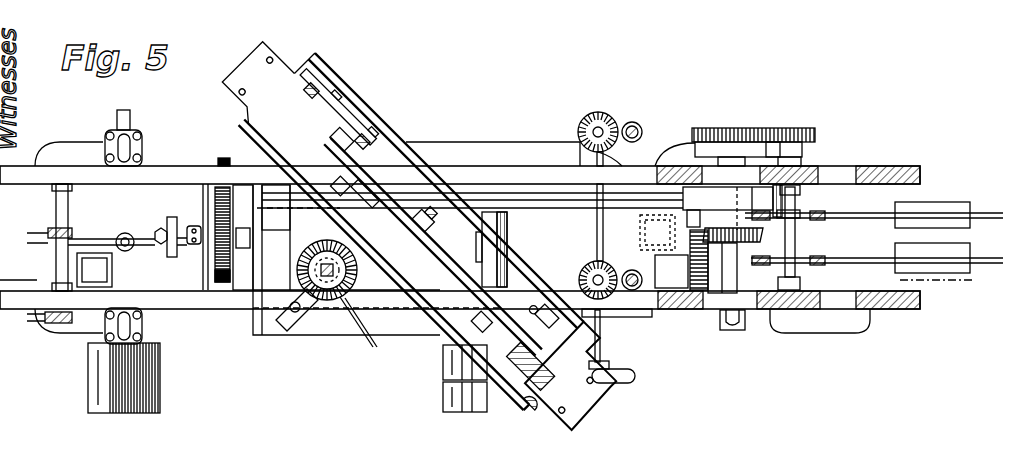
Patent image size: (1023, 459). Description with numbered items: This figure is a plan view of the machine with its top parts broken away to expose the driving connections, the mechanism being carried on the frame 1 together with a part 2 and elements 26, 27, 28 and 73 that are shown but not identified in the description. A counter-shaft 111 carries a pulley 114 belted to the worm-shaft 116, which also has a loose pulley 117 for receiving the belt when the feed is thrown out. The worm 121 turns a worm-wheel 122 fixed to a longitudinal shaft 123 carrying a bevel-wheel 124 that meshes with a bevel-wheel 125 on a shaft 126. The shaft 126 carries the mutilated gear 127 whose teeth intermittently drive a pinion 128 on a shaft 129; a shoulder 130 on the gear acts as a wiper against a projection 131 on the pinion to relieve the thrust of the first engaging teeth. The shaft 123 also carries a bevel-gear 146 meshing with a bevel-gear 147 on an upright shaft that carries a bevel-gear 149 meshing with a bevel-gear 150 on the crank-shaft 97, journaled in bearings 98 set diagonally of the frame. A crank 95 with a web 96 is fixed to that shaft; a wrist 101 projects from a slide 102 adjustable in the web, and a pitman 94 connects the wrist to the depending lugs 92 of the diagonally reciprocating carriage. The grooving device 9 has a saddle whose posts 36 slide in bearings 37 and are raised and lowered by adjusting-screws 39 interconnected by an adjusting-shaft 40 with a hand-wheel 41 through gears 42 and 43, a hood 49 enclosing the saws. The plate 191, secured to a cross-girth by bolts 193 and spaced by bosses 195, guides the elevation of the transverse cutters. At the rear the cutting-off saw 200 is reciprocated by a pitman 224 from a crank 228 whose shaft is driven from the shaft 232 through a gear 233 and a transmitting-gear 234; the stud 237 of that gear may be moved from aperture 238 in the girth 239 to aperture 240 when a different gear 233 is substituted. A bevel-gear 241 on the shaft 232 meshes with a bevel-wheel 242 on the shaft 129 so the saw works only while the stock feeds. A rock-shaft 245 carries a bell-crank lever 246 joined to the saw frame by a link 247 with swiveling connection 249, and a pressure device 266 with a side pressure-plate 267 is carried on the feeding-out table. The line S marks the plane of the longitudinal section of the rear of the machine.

The frame rail 1 is at (912, 168).
The shaft 2 is at (990, 222).
The grooving device 9 is at (341, 175).
The lower shaft 26 is at (822, 262).
The bevel gear 27 is at (740, 250).
The post 28 is at (768, 258).
The post 36 is at (640, 122).
The bearing 37 is at (657, 155).
The adjusting-screw 39 is at (603, 113).
The adjusting-shaft 40 is at (604, 214).
The hand-wheel 41 is at (636, 380).
The gear 42 is at (580, 150).
The gear 43 is at (582, 122).
The hood 49 is at (657, 232).
The arm bar 73 is at (360, 125).
The depending lugs 92 is at (535, 318).
The pitman 94 is at (474, 320).
The crank 95 is at (375, 190).
The web 96 is at (343, 180).
The crank-shaft 97 is at (284, 330).
The bearings 98 is at (320, 244).
The wrist 101 is at (438, 203).
The slide 102 is at (420, 206).
The counter-shaft 111 is at (130, 120).
The pulley 114 is at (92, 377).
The worm-shaft 116 is at (445, 362).
The loose pulley 117 is at (445, 397).
The worm 121 is at (508, 240).
The worm-wheel 122 is at (476, 244).
The shaft 123 is at (482, 252).
The bevel-wheel 124 is at (722, 320).
The bevel-wheel 125 is at (728, 208).
The shaft 126 is at (730, 270).
The mutilated gear 127 is at (708, 128).
The pinion 128 is at (790, 128).
The shaft 129 is at (800, 243).
The shoulder 130 is at (772, 128).
The projection 131 is at (782, 147).
The bevel-gear 146 is at (375, 347).
The bevel-gear 147 is at (370, 340).
The bevel-gear 149 is at (296, 246).
The bevel-gear 150 is at (298, 262).
The plate 191 is at (352, 108).
The bolts 193 is at (318, 96).
The bosses 195 is at (338, 100).
The cutting-off saw 200 is at (423, 235).
The pitman 224 is at (160, 229).
The crank 228 is at (170, 252).
The shaft 232 is at (578, 202).
The gear 233 is at (222, 158).
The transmitting-gear 234 is at (226, 284).
The stud 237 is at (110, 312).
The aperture 238 is at (206, 252).
The girth 239 is at (215, 188).
The aperture 240 is at (212, 213).
The bevel-gear 241 is at (784, 195).
The bevel-wheel 242 is at (800, 214).
The rock-shaft 245 is at (58, 258).
The bell-crank lever 246 is at (36, 274).
The link 247 is at (94, 162).
The swiveling connection 249 is at (118, 235).
The pressure device 266 is at (680, 451).
The side pressure-plate 267 is at (627, 451).
The section line S is at (945, 282).